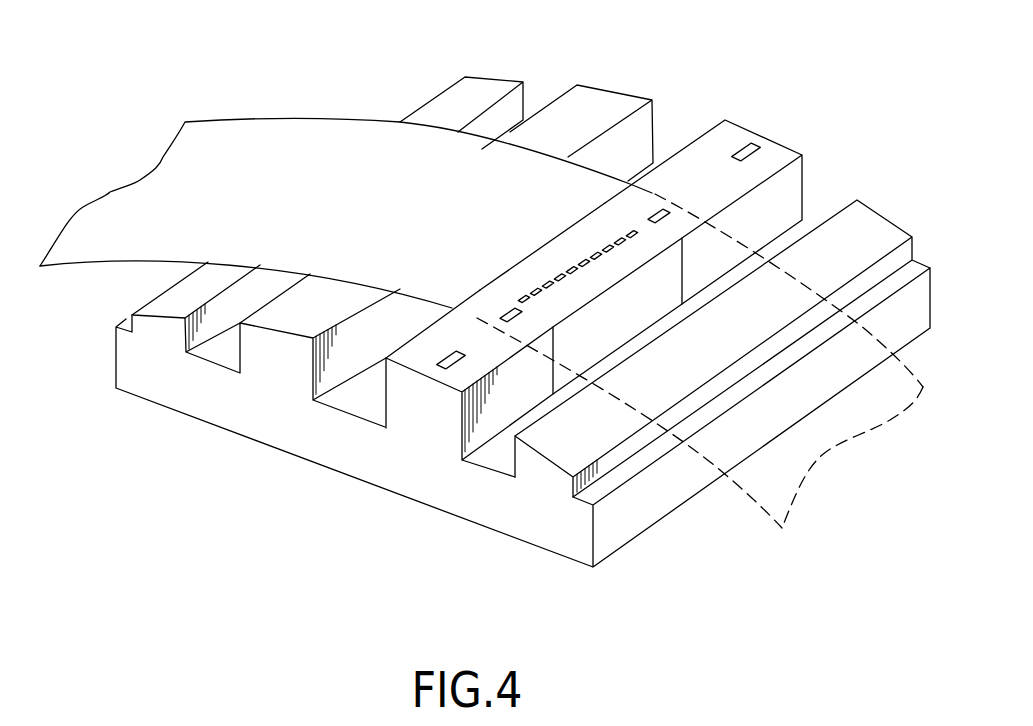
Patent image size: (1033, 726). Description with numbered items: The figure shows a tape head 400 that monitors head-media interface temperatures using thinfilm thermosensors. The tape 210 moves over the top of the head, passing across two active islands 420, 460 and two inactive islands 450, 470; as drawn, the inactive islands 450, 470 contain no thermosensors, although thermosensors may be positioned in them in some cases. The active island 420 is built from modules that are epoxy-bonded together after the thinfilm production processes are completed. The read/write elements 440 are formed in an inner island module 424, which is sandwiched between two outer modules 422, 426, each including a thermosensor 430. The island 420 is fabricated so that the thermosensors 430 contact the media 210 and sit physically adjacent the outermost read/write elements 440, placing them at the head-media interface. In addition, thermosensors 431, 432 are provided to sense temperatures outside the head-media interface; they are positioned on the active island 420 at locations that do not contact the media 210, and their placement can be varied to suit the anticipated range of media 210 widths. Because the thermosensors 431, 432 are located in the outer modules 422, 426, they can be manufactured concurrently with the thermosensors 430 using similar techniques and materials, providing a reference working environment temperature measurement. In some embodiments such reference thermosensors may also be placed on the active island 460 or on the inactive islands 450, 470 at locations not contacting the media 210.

The tape 210 is at (217, 122).
The head 400 is at (130, 396).
The active island 420 is at (383, 400).
The outer module 422 is at (504, 395).
The inner island module 424 is at (605, 322).
The outer module 426 is at (752, 215).
The thermosensor 430 is at (508, 309).
The thermosensor 431 is at (446, 364).
The thermosensor 432 is at (752, 150).
The read/write elements 440 is at (534, 288).
The inactive island 450 is at (500, 466).
The active island 460 is at (240, 360).
The inactive island 470 is at (148, 303).